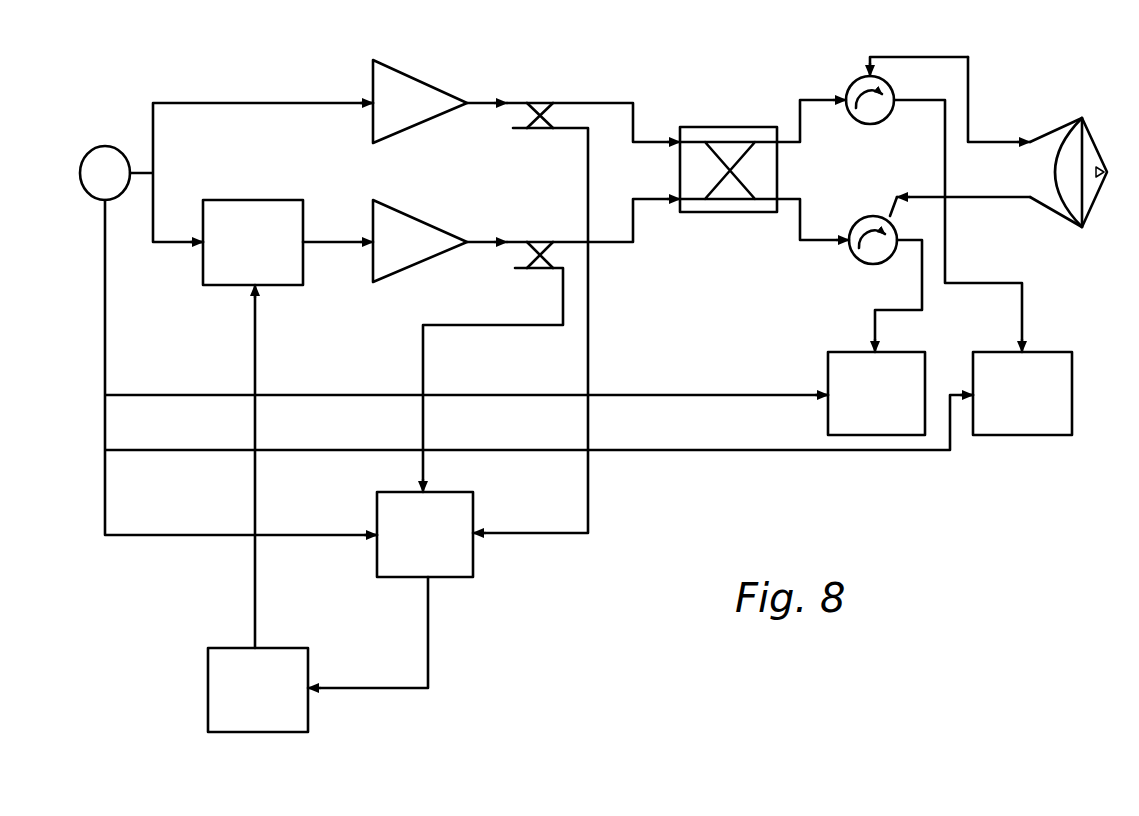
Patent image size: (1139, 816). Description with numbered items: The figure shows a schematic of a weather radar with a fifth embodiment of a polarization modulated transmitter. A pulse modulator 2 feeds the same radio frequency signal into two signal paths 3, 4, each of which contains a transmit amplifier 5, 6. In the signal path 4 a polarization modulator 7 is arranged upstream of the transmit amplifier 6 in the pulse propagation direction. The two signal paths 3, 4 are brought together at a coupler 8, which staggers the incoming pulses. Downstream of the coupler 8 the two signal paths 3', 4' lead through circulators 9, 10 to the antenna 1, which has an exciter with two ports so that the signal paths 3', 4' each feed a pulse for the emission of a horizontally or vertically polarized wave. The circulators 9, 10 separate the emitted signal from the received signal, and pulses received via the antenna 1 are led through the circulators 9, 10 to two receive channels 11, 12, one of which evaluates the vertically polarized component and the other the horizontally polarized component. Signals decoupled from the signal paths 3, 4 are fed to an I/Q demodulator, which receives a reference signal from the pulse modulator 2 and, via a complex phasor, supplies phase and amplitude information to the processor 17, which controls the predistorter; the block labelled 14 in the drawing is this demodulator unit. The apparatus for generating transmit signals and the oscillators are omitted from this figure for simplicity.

The antenna 1 is at (1101, 108).
The pulse modulator 2 is at (98, 148).
The first signal path 3 is at (573, 284).
The first downstream signal path 3' is at (811, 72).
The second signal path 4 is at (551, 345).
The second downstream signal path 4' is at (813, 251).
The transmit amplifier 5 is at (400, 90).
The transmit amplifier 6 is at (412, 253).
The polarization modulator 7 is at (228, 287).
The coupler 8 is at (722, 125).
The circulator 9 is at (866, 125).
The circulator 10 is at (866, 265).
The receive channel 11 is at (840, 410).
The receive channel 12 is at (1060, 405).
The I/Q demodulator 14 is at (447, 568).
The processor 17 is at (248, 722).